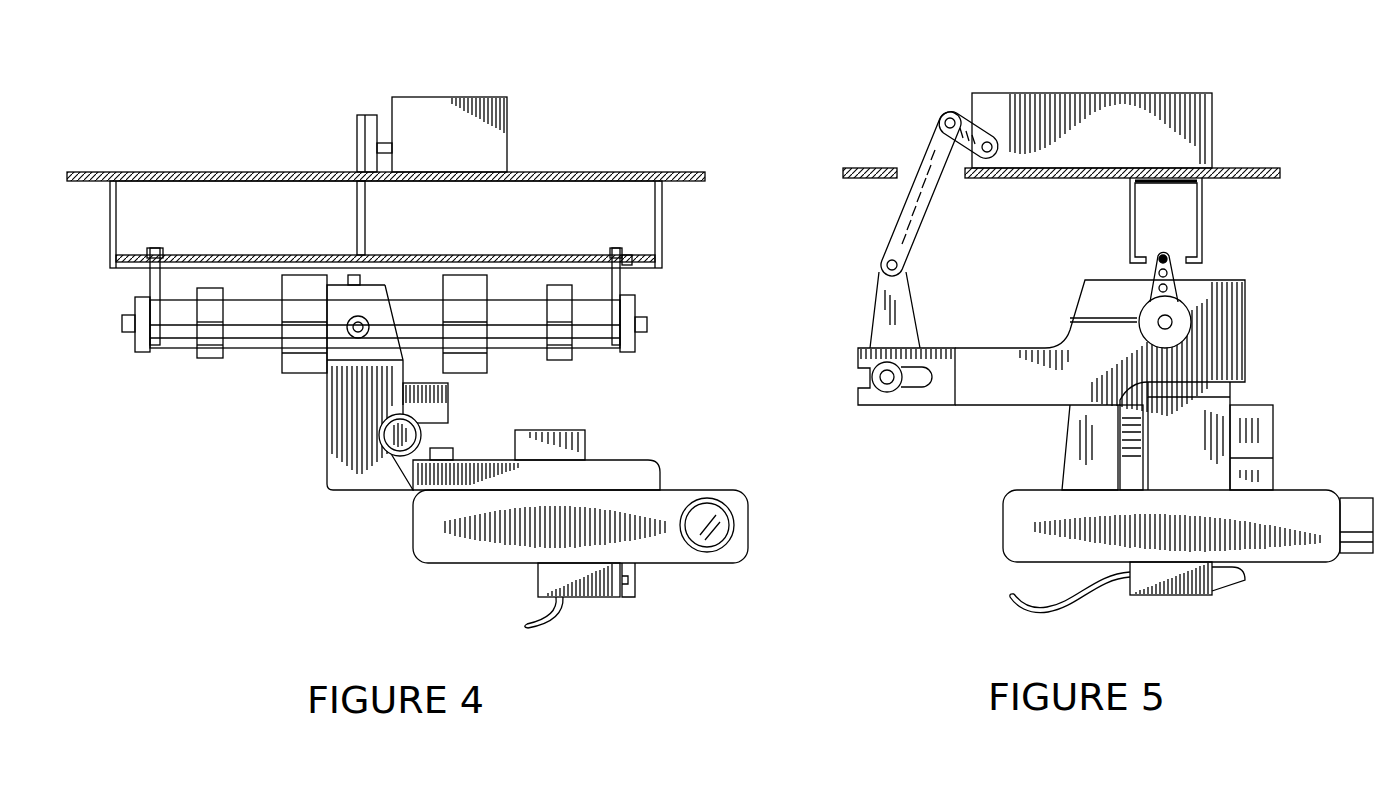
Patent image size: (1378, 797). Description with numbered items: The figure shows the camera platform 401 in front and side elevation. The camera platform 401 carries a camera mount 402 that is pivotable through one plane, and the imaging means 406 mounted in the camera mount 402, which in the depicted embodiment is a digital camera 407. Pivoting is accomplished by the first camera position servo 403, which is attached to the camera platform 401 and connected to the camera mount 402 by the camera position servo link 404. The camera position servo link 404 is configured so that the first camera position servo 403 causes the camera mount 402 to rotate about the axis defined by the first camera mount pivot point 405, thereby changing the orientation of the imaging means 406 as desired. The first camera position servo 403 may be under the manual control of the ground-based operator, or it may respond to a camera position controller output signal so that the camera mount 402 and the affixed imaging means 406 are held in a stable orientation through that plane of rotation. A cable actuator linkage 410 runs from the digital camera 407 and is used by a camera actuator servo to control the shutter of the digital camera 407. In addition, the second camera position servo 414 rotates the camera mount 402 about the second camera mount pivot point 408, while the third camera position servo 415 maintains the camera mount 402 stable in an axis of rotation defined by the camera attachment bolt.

In FIG. 4, the camera platform 401 is at (140, 172).
In FIG. 5, the camera platform 401 is at (1242, 168).
In FIG. 4, the camera mount 402 is at (327, 428).
In FIG. 4, the first camera position servo 403 is at (450, 97).
In FIG. 5, the first camera position servo 403 is at (1093, 93).
In FIG. 4, the camera position servo link 404 is at (357, 212).
In FIG. 5, the camera position servo link 404 is at (920, 213).
In FIG. 4, the first camera mount pivot point 405 is at (650, 325).
In FIG. 5, the first camera mount pivot point 405 is at (1171, 318).
In FIG. 4, the imaging means 406 is at (666, 593).
In FIG. 4, the digital camera 407 is at (750, 520).
In FIG. 4, the second camera mount pivot point 408 is at (403, 432).
In FIG. 4, the cable actuator linkage 410 is at (545, 624).
In FIG. 5, the cable actuator linkage 410 is at (1048, 612).
In FIG. 4, the second camera position servo 414 is at (430, 383).
In FIG. 4, the third camera position servo 415 is at (578, 428).